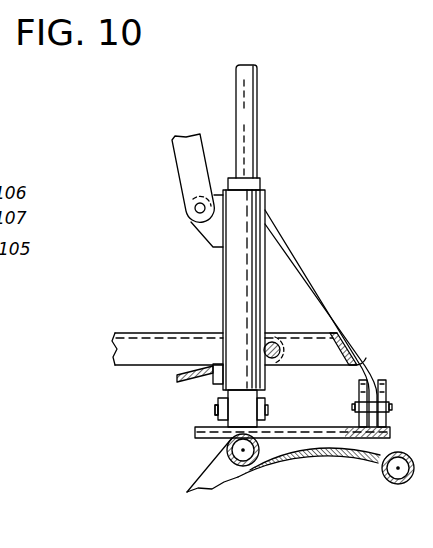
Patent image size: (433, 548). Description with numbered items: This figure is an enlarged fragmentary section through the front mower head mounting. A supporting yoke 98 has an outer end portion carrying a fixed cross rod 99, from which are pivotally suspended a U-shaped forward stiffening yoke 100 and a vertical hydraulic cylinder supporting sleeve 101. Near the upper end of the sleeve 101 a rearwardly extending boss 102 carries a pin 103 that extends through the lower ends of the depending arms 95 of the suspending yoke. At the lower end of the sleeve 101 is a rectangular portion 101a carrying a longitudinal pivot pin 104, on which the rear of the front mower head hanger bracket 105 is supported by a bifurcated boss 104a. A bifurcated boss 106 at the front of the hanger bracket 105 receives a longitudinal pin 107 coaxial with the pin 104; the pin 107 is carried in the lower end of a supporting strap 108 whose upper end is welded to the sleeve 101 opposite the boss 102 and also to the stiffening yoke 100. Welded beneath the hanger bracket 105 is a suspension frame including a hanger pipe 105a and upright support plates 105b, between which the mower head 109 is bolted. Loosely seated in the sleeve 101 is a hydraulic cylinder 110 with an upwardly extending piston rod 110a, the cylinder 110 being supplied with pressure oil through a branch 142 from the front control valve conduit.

The depending arms 95 is at (186, 160).
The supporting yoke 98 is at (145, 333).
The fixed cross rod 99 is at (285, 337).
The forward stiffening yoke 100 is at (320, 338).
The hydraulic cylinder supporting sleeve 101 is at (228, 272).
The rectangular portion 101a is at (241, 408).
The rearwardly extending boss 102 is at (205, 232).
The pin 103 is at (196, 208).
The longitudinal pivot pin 104 is at (218, 408).
The bifurcated boss 104a is at (218, 418).
The front mower head hanger bracket 105 is at (347, 427).
The hanger pipe 105a is at (232, 443).
The upright support plates 105b is at (200, 480).
The bifurcated boss 106 is at (383, 378).
The longitudinal pin 107 is at (353, 403).
The supporting strap 108 is at (300, 262).
The mower head 109 is at (336, 466).
The hydraulic cylinder 110 is at (261, 184).
The piston rod 110a is at (258, 118).
The branch 142 is at (177, 378).